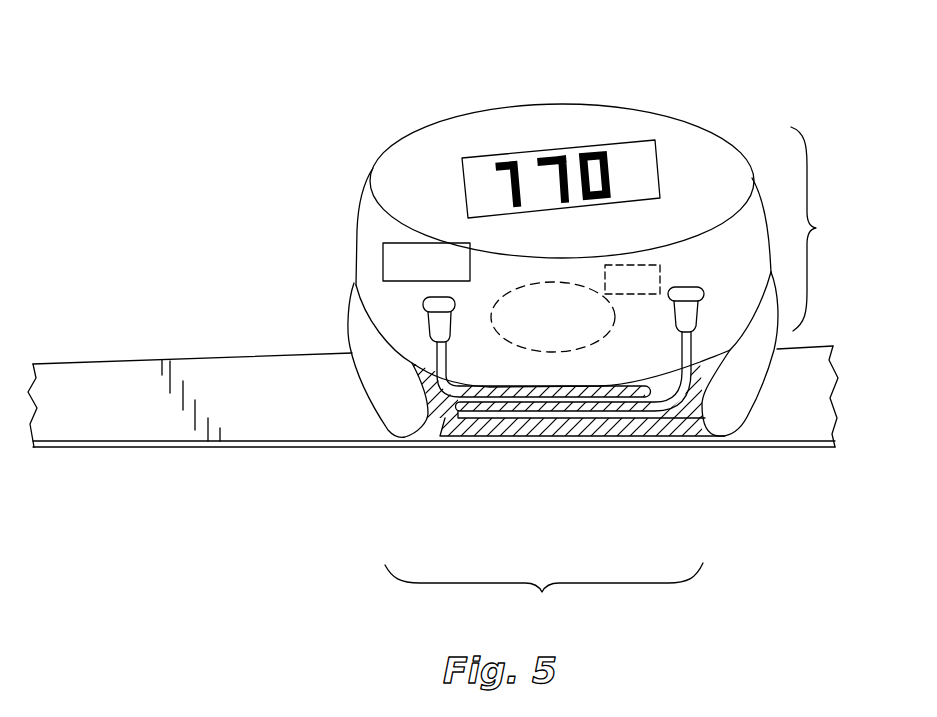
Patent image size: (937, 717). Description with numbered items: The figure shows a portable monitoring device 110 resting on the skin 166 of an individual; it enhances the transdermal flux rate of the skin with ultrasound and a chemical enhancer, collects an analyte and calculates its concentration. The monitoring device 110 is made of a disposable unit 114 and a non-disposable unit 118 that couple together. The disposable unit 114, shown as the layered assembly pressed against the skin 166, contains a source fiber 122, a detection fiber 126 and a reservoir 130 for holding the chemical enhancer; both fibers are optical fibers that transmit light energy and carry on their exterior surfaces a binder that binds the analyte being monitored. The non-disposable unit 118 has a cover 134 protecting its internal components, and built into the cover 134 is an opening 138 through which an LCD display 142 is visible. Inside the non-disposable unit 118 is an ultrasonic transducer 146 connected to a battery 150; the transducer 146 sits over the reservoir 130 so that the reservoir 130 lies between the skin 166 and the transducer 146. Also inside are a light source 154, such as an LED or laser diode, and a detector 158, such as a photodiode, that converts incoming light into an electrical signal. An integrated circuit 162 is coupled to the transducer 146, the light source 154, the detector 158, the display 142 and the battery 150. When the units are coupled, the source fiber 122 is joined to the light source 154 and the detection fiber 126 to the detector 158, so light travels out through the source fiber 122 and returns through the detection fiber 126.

The monitoring device 110 is at (742, 119).
The disposable unit 114 is at (544, 593).
The non-disposable unit 118 is at (825, 229).
The source fiber 122 is at (443, 441).
The detection fiber 126 is at (552, 422).
The reservoir 130 is at (460, 437).
The cover 134 is at (422, 128).
The opening 138 is at (487, 153).
The LCD display 142 is at (575, 157).
The ultrasonic transducer 146 is at (569, 328).
The battery 150 is at (395, 255).
The light source 154 is at (428, 313).
The detector 158 is at (697, 286).
The integrated circuit 162 is at (632, 279).
The skin 166 is at (262, 410).